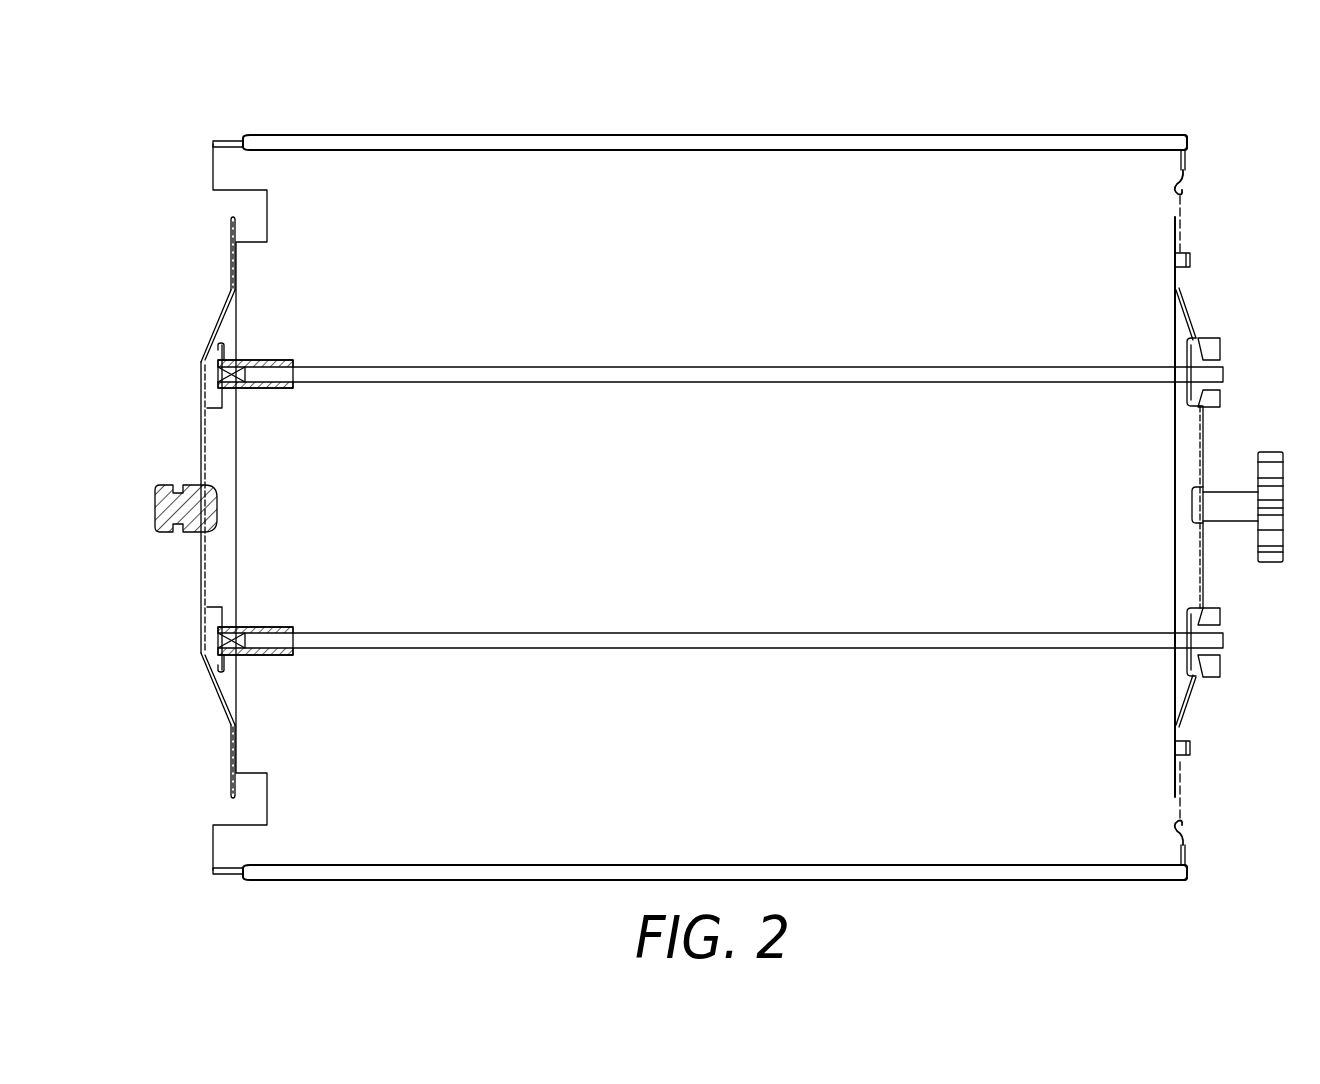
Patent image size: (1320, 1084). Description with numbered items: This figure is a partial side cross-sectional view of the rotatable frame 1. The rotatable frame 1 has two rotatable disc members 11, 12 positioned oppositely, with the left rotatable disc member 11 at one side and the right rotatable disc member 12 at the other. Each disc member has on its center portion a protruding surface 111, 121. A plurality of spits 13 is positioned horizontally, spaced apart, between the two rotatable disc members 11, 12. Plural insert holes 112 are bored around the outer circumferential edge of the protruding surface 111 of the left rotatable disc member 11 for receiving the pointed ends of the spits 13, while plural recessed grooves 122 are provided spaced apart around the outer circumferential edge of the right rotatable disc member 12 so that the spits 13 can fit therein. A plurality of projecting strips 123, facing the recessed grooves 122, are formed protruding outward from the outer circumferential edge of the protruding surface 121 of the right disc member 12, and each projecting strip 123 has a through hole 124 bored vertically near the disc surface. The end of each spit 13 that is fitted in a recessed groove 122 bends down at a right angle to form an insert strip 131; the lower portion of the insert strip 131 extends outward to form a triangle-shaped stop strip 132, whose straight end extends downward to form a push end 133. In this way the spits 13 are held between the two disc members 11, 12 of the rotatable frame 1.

The rotatable frame 1 is at (1215, 700).
The left rotatable disc member 11 is at (203, 445).
The protruding surface of left rotatable disc member 111 is at (222, 320).
The insert holes 112 is at (232, 238).
The right rotatable disc member 12 is at (1205, 432).
The protruding surface of right rotatable disc member 121 is at (1192, 312).
The recessed grooves 122 is at (1176, 238).
The projecting strips 123 is at (1192, 262).
The through hole 124 is at (1184, 252).
The spits 13 is at (700, 150).
The insert strip 131 is at (1188, 150).
The stop strip 132 is at (1186, 166).
The push end 133 is at (1183, 190).